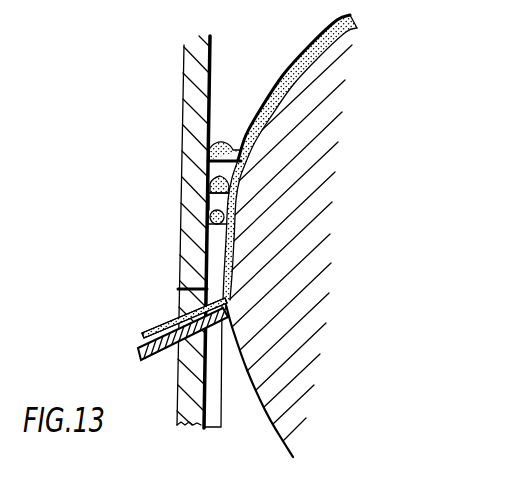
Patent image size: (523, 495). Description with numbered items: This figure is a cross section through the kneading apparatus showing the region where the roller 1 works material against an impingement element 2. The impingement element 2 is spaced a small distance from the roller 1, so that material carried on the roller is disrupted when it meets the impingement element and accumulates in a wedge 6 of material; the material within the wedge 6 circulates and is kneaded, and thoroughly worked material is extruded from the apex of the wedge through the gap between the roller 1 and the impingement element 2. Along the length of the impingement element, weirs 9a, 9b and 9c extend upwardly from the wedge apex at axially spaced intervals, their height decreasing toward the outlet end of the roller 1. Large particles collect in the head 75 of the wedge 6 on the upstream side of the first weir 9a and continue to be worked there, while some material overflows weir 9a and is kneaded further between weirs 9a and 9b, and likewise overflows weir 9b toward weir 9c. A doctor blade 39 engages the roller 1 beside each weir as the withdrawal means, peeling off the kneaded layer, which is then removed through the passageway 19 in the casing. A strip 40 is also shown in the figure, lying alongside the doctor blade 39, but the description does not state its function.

The roller 1 is at (283, 407).
The impingement element 2 is at (195, 78).
The wedge 6 is at (207, 148).
The weir 9a is at (210, 165).
The weir 9b is at (213, 223).
The weir 9c is at (215, 248).
The passageway 19 is at (180, 292).
The doctor blade 39 is at (163, 352).
The foil strip 40 is at (163, 325).
The head of the wedge 75 is at (224, 132).